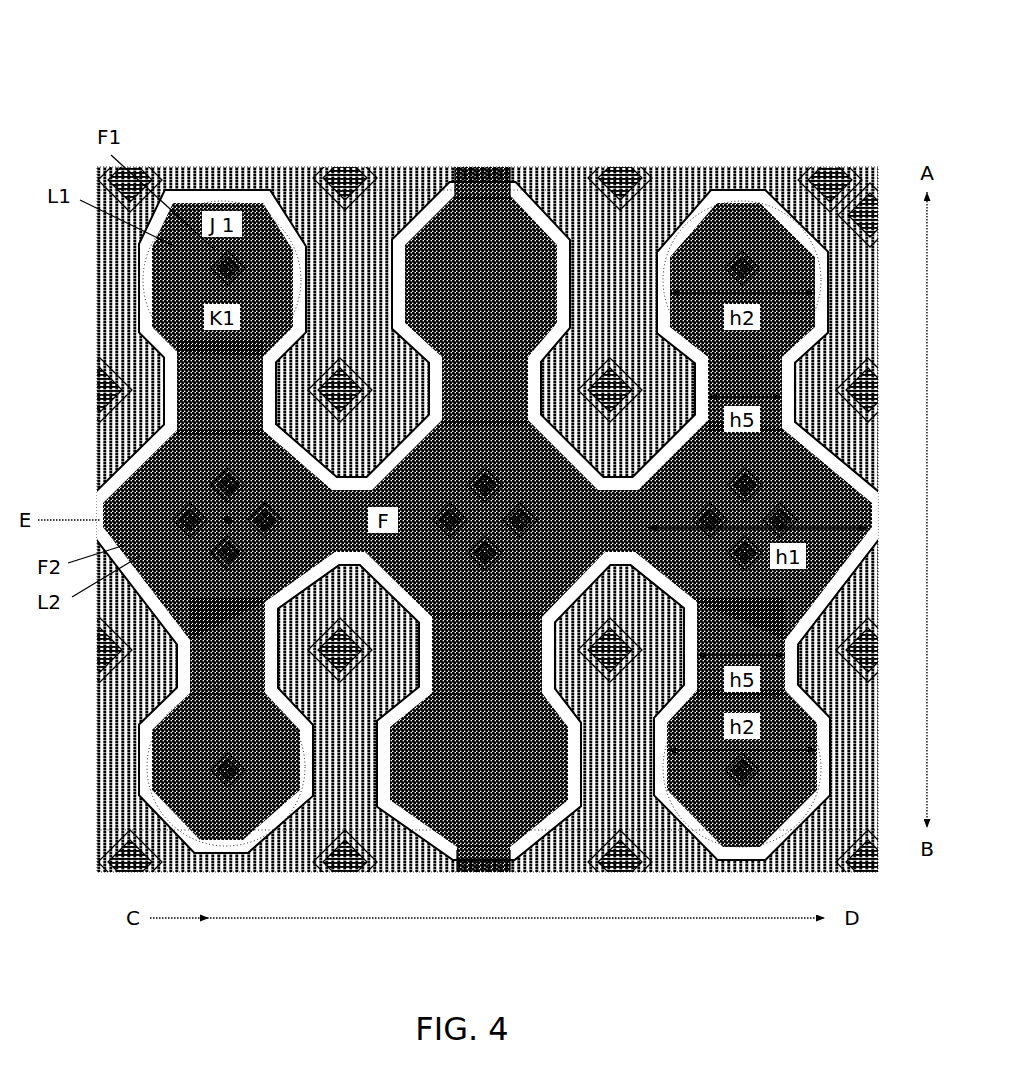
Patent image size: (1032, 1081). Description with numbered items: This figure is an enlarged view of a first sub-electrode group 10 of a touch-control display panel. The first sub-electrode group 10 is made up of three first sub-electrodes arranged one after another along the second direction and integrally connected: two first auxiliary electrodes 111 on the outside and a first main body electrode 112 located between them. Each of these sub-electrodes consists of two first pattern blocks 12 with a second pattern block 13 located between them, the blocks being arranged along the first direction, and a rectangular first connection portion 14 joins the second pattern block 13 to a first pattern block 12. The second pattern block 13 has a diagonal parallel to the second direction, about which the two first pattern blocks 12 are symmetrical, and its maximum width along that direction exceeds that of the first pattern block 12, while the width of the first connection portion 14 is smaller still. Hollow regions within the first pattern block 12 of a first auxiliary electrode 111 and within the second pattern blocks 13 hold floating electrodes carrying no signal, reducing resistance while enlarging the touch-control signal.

The first sub-electrode group 10 is at (470, 90).
The first auxiliary electrode 111 is at (217, 167).
The first main body electrode 112 is at (487, 167).
The first pattern block 12 is at (150, 262).
The second pattern block 13 is at (117, 466).
The first connection portion 14 is at (165, 380).